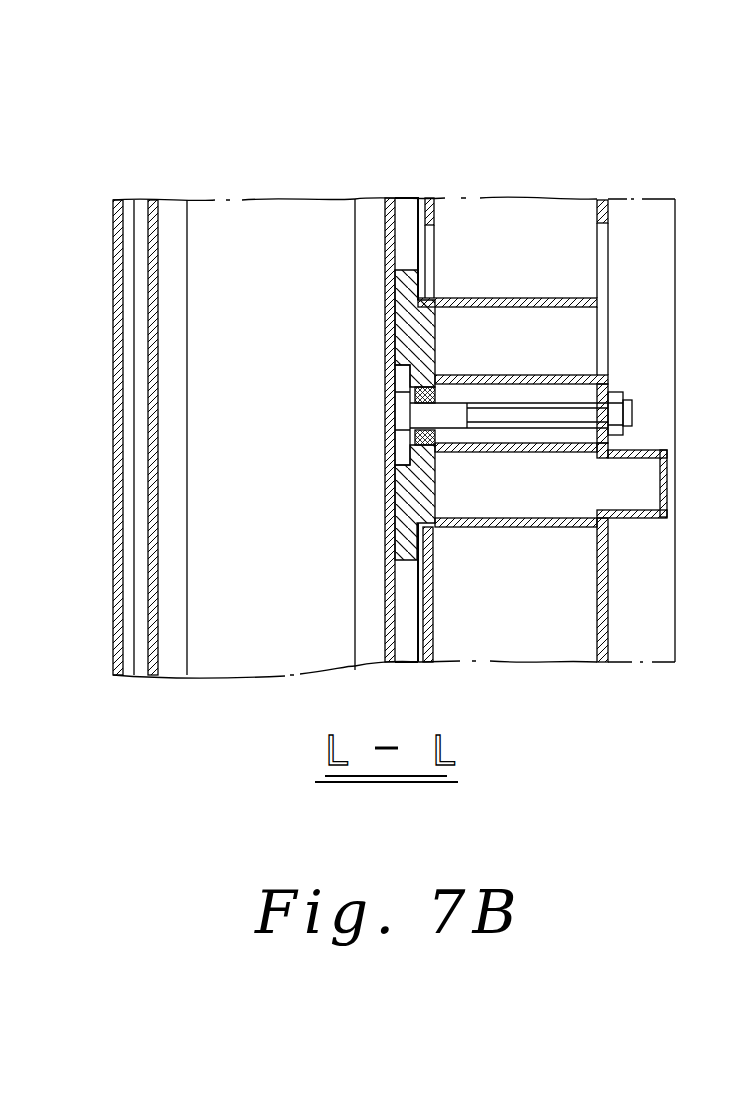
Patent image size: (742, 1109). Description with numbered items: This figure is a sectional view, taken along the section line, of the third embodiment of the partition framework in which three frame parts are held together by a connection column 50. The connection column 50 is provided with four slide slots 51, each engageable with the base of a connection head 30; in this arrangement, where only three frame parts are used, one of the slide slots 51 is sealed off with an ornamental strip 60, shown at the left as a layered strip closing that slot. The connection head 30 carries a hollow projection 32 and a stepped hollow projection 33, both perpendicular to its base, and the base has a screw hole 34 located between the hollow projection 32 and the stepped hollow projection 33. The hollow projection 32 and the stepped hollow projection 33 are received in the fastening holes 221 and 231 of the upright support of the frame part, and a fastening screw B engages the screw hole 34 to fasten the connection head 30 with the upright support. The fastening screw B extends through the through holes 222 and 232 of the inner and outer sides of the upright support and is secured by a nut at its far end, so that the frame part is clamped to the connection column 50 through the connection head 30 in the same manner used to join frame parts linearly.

The ornamental strip 60 is at (113, 310).
The connection column 50 is at (272, 225).
The slide slot 51 is at (408, 225).
The fastening hole 231 is at (437, 245).
The fastening hole 221 is at (600, 247).
The hollow projection 32 is at (528, 300).
The stepped hollow projection 33 is at (516, 525).
The connection head 30 is at (403, 308).
The screw hole 34 is at (400, 490).
The fastening screw B is at (405, 413).
The through hole 232 is at (437, 442).
The through hole 222 is at (595, 446).